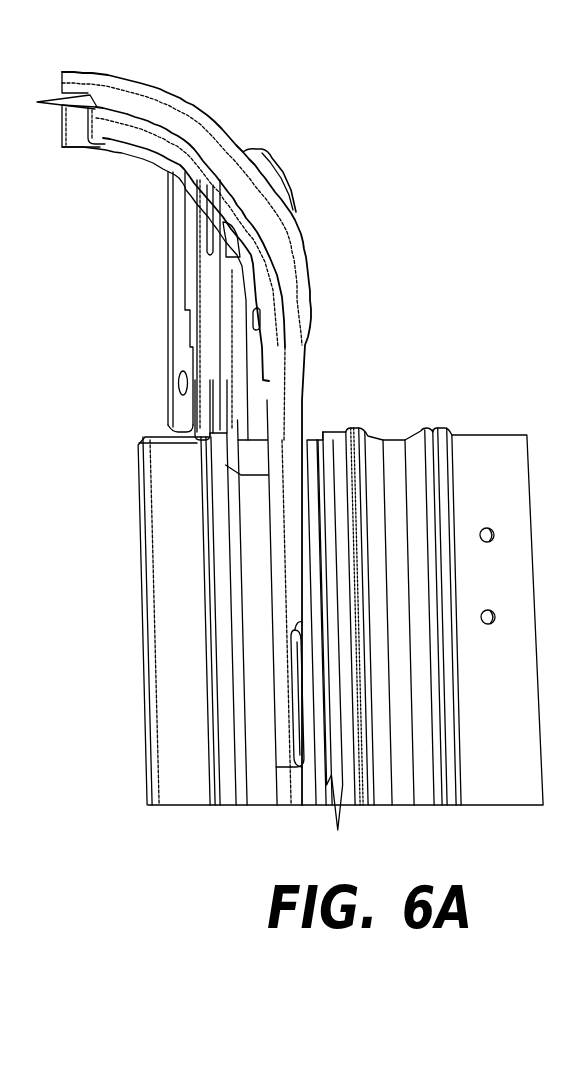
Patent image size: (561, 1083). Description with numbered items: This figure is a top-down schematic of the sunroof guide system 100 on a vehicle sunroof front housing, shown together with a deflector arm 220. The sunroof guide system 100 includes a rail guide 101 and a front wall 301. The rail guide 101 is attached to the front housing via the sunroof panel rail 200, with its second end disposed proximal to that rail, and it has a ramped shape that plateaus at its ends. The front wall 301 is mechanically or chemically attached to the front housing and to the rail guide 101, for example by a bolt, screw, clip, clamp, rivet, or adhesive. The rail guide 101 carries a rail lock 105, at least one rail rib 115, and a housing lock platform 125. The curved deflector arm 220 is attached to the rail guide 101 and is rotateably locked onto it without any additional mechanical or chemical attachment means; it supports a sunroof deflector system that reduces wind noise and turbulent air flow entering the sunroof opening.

The sunroof guide system 100 is at (148, 183).
The rail guide 101 is at (242, 377).
The rail lock 105 is at (247, 428).
The rail rib 115 is at (232, 246).
The housing lock platform 125 is at (278, 177).
The sunroof panel rail 200 is at (257, 508).
The deflector arm 220 is at (153, 103).
The front wall 301 is at (185, 278).